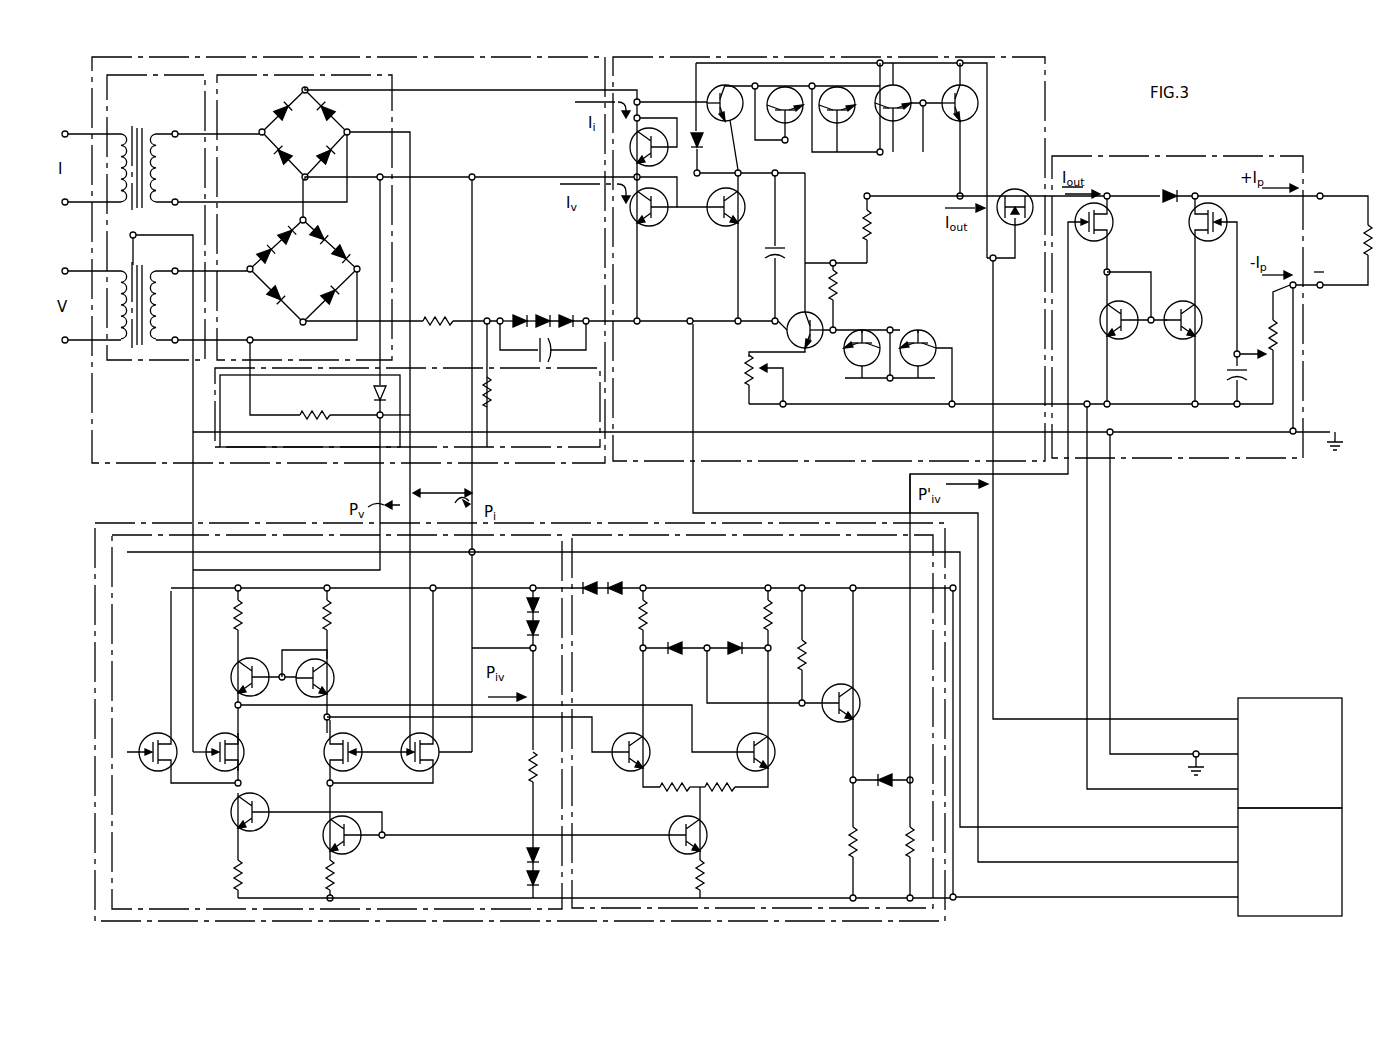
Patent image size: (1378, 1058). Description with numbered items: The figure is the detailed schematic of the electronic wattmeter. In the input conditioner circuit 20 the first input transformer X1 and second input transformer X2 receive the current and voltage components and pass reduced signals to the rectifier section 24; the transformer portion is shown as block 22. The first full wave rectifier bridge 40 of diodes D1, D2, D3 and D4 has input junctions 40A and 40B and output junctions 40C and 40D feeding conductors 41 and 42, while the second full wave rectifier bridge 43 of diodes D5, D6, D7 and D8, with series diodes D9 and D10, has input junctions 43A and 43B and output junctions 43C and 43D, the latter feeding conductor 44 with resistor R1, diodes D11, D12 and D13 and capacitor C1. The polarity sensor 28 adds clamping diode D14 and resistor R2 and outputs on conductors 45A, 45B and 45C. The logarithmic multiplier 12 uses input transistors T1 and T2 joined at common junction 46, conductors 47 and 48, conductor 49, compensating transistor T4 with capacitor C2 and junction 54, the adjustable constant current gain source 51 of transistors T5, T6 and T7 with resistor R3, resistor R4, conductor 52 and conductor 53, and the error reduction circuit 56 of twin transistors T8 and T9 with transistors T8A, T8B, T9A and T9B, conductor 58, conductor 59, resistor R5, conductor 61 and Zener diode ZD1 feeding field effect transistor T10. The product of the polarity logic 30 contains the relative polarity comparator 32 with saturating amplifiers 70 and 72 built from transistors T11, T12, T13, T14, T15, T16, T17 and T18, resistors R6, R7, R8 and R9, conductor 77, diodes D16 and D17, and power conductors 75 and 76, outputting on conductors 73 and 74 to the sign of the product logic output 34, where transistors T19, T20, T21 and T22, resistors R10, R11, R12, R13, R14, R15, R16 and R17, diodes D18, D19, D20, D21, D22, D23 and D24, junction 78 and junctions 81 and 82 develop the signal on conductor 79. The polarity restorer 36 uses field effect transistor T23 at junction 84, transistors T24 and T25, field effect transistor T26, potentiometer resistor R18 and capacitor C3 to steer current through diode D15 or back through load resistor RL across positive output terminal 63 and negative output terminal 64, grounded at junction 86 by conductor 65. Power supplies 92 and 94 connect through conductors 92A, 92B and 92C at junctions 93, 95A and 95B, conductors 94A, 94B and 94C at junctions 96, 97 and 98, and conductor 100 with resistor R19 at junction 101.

The logarithmic multiplier 12 is at (643, 56).
The input conditioner circuit 20 is at (497, 66).
The transformer section 22 is at (107, 95).
The rectifier section 24 is at (392, 98).
The polarity sensor 28 is at (400, 387).
The product of the polarity logic 30 is at (193, 523).
The relative polarity comparator 32 is at (278, 535).
The sign of the product logic output 34 is at (673, 530).
The polarity restorer 36 is at (1070, 158).
The first full wave rectifier bridge 40 is at (291, 133).
The input junction 40A is at (260, 130).
The input junction 40B is at (344, 130).
The output junction 40C is at (304, 91).
The output junction 40D is at (300, 177).
The conductor 41 is at (432, 89).
The conductor 42 is at (432, 174).
The second full wave rectifier bridge 43 is at (297, 252).
The input junction 43A is at (215, 286).
The input junction 43B is at (337, 273).
The output junction 43C is at (304, 219).
The output junction 43D is at (301, 323).
The conductor 44 is at (408, 320).
The conductor 45A is at (380, 479).
The conductor 45B is at (410, 479).
The conductor 45C is at (475, 498).
The common junction 46 is at (630, 174).
The conductor 47 is at (671, 98).
The conductor 48 is at (644, 322).
The conductor 49 is at (737, 174).
The adjustable constant current gain source 51 is at (845, 396).
The conductor 52 is at (978, 389).
The conductor 53 is at (805, 236).
The junction 54 is at (770, 181).
The error reduction circuit 56 is at (972, 176).
The conductor 58 is at (732, 86).
The conductor 59 is at (916, 165).
The conductor 61 is at (728, 64).
The positive output terminal 63 is at (1319, 193).
The negative output terminal 64 is at (1330, 291).
The grounded conductor 65 is at (1180, 436).
The saturating amplifier 70 is at (167, 810).
The saturating amplifier circuit 72 is at (414, 810).
The conductor 73 is at (462, 702).
The conductor 74 is at (488, 720).
The conductor 75 is at (427, 898).
The conductor 76 is at (175, 586).
The conductor 77 is at (440, 838).
The junction 78 is at (851, 782).
The conductor 79 is at (1055, 480).
The junction 81 is at (642, 658).
The junction 82 is at (767, 654).
The junction 84 is at (1108, 196).
The junction 86 is at (1287, 284).
The first regulated power supply 92 is at (1342, 733).
The grounded output conductor 92A is at (1110, 537).
The positive output conductor 92B is at (993, 577).
The negative output conductor 92C is at (1086, 540).
The junction 93 is at (1111, 431).
The second regulated power supply 94 is at (1342, 843).
The common output conductor 94A is at (693, 489).
The positive output conductor 94B is at (1132, 827).
The negative output conductor 94C is at (1132, 897).
The circuit junction 95A is at (996, 263).
The circuit junction 95B is at (1086, 402).
The circuit junction 96 is at (694, 323).
The circuit junction 97 is at (956, 586).
The circuit junction 98 is at (956, 900).
The conductor 100 is at (487, 447).
The circuit junction 101 is at (480, 318).
The first input transformer X1 is at (142, 122).
The second input transformer X2 is at (142, 259).
The resistor R1 is at (438, 330).
The current limiting resistor R2 is at (308, 407).
The variable resistor R3 is at (743, 369).
The resistor R4 is at (844, 298).
The resistor R5 is at (879, 228).
The resistor R6 is at (230, 878).
The resistor R7 is at (251, 624).
The resistor R8 is at (340, 625).
The resistor R9 is at (326, 875).
The resistor R10 is at (675, 790).
The resistor R11 is at (723, 790).
The current determining resistor R12 is at (717, 879).
The resistor R13 is at (648, 610).
The resistor R14 is at (765, 613).
The resistor R15 is at (820, 645).
The resistor R16 is at (848, 844).
The resistor R17 is at (906, 844).
The potentiometer resistor R18 is at (1266, 344).
The resistor R19 is at (494, 395).
The load resistor RL is at (1360, 242).
The capacitor C1 is at (546, 364).
The noise filtering capacitor C2 is at (766, 248).
The filtering capacitor C3 is at (1237, 375).
The diode D1 is at (272, 104).
The diode D2 is at (275, 158).
The diode D3 is at (316, 151).
The diode D4 is at (314, 118).
The diode D5 is at (259, 246).
The diode D6 is at (264, 302).
The diode D7 is at (328, 299).
The diode D8 is at (344, 255).
The diode D9 is at (284, 228).
The diode D10 is at (317, 233).
The diode D11 is at (515, 312).
The diode D12 is at (538, 314).
The diode D13 is at (573, 316).
The clamping diode D14 is at (372, 393).
The diode D15 is at (1153, 192).
The diode D16 is at (526, 606).
The diode D17 is at (526, 631).
The diode D18 is at (526, 856).
The diode D19 is at (526, 879).
The diode D20 is at (686, 644).
The diode D21 is at (741, 644).
The diode D22 is at (584, 586).
The diode D23 is at (622, 594).
The diode D24 is at (896, 770).
The Zener diode ZD1 is at (748, 149).
The first input npn transistor T1 is at (659, 143).
The second input npn transistor T2 is at (658, 207).
The compensating npn transistor T4 is at (711, 248).
The transistor T5 is at (869, 329).
The transistor T6 is at (923, 329).
The transistor T7 is at (787, 338).
The twin transistor T8 is at (812, 70).
The transistor T8A is at (792, 83).
The transistor T8B is at (820, 90).
The twin transistor T9 is at (927, 66).
The transistor T9A is at (872, 88).
The transistor T9B is at (972, 86).
The field effect transistor T10 is at (994, 191).
The constant current source npn transistor T11 is at (238, 827).
The second constant current transistor T12 is at (228, 680).
The field effect transistor T13 is at (255, 758).
The field effect transistor T14 is at (163, 737).
The constant current source transistor T15 is at (337, 673).
The field effect transistor T16 is at (325, 744).
The field effect transistor T17 is at (426, 766).
The constant current source transistor T18 is at (318, 840).
The transistor T19 is at (655, 765).
The transistor T20 is at (778, 760).
The transistor T21 is at (706, 838).
The differential amplifier output transistor T22 is at (860, 696).
The field effect transistor T23 is at (1121, 217).
The npn transistor T24 is at (1122, 340).
The npn transistor T25 is at (1195, 358).
The field effect transistor T26 is at (1194, 240).